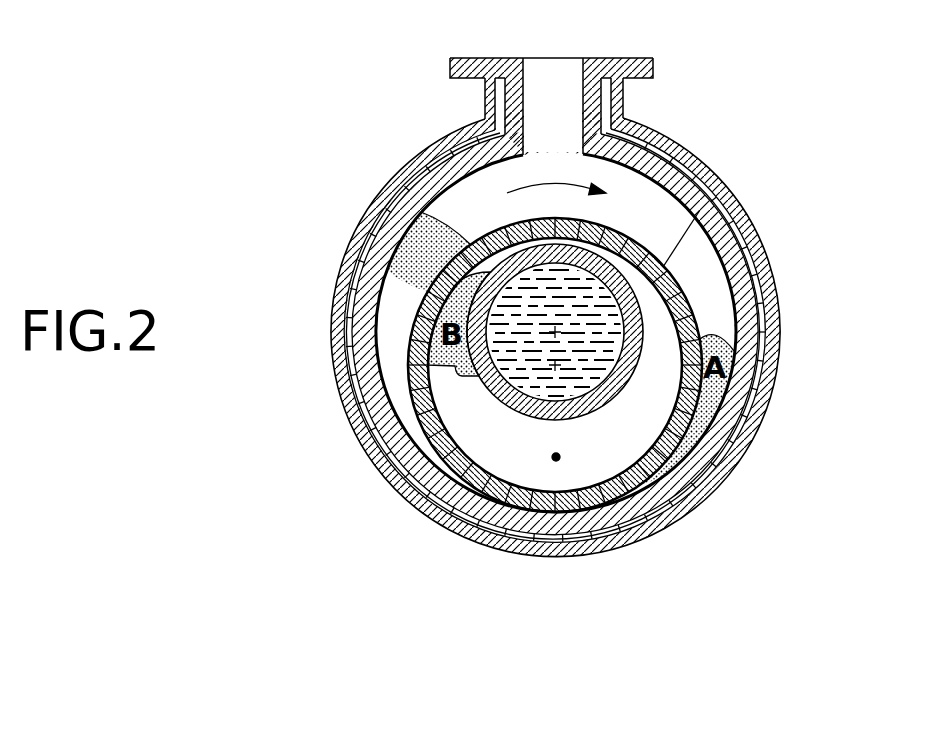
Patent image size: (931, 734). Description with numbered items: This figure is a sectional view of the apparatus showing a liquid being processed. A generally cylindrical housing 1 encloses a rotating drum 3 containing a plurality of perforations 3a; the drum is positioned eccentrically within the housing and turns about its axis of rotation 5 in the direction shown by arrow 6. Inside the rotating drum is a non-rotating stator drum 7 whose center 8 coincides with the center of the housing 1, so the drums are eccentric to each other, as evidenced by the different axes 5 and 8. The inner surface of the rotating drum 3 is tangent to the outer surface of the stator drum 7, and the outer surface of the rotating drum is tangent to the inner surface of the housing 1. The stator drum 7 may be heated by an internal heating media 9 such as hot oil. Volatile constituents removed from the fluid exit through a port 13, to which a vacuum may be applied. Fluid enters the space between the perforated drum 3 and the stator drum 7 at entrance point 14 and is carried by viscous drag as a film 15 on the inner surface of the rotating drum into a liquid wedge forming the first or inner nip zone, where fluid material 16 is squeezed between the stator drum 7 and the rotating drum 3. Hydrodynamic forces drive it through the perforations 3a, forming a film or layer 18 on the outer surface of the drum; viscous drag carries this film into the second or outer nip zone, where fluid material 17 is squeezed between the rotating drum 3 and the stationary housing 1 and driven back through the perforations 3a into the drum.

The housing 1 is at (430, 150).
The rotating drum 3 is at (727, 218).
The perforations 3a is at (447, 225).
The axis of rotation 5 is at (555, 365).
The arrow 6 is at (606, 186).
The stator drum 7 is at (500, 393).
The center 8 is at (555, 332).
The internal heating media 9 is at (555, 332).
The port 13 is at (548, 57).
The entrance point 14 is at (556, 457).
The film 15 is at (549, 488).
The fluid material 16 is at (428, 287).
The fluid material 17 is at (710, 390).
The film 18 is at (415, 310).